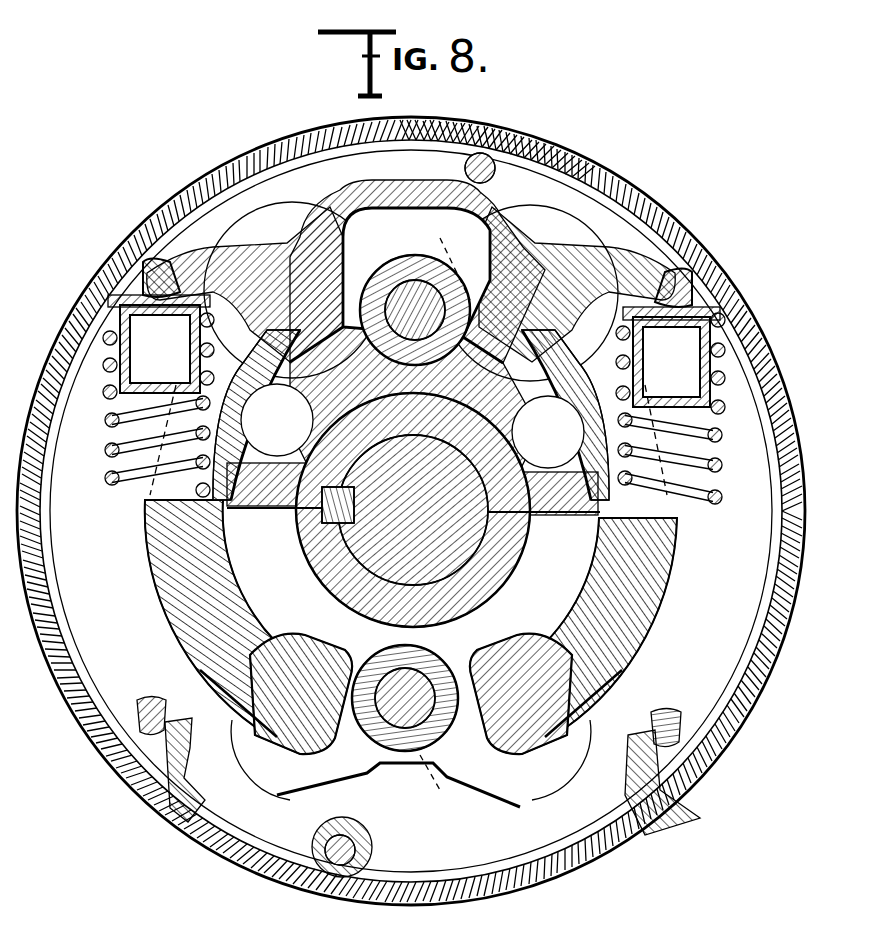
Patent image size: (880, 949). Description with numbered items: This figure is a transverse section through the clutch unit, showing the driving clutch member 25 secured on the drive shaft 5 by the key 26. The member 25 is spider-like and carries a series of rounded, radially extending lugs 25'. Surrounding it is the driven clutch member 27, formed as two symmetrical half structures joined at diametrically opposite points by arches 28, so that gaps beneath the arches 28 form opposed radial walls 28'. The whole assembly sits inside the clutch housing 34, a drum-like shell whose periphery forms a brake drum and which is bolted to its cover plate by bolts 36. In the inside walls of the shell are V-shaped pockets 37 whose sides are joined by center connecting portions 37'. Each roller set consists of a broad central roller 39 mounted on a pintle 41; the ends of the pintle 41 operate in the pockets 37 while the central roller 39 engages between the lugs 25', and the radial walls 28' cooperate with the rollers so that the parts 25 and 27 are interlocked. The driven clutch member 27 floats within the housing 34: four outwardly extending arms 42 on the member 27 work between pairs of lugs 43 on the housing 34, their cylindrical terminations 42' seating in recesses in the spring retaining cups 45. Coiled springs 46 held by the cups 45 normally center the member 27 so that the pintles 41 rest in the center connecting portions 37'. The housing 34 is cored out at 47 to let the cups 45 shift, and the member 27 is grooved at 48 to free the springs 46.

The drive shaft 5 is at (448, 525).
The driving clutch member 25 is at (412, 477).
The lugs 25' is at (412, 426).
The key 26 is at (322, 505).
The driven clutch member 27 is at (185, 612).
The arches 28 is at (417, 258).
The opposed radial walls 28' is at (398, 507).
The clutch housing 34 is at (330, 190).
The bolts 36 is at (495, 175).
The V-shaped pockets 37 is at (411, 505).
The center connecting portions 37' is at (446, 513).
The central roller 39 is at (405, 290).
The pintle 41 is at (420, 275).
The arms 42 is at (411, 284).
The cylindrical terminations 42' is at (423, 285).
The lugs 43 is at (160, 255).
The spring retaining cups 45 is at (678, 698).
The coiled springs 46 is at (104, 430).
The cored-out portions 47 is at (100, 547).
The groove 48 is at (738, 516).